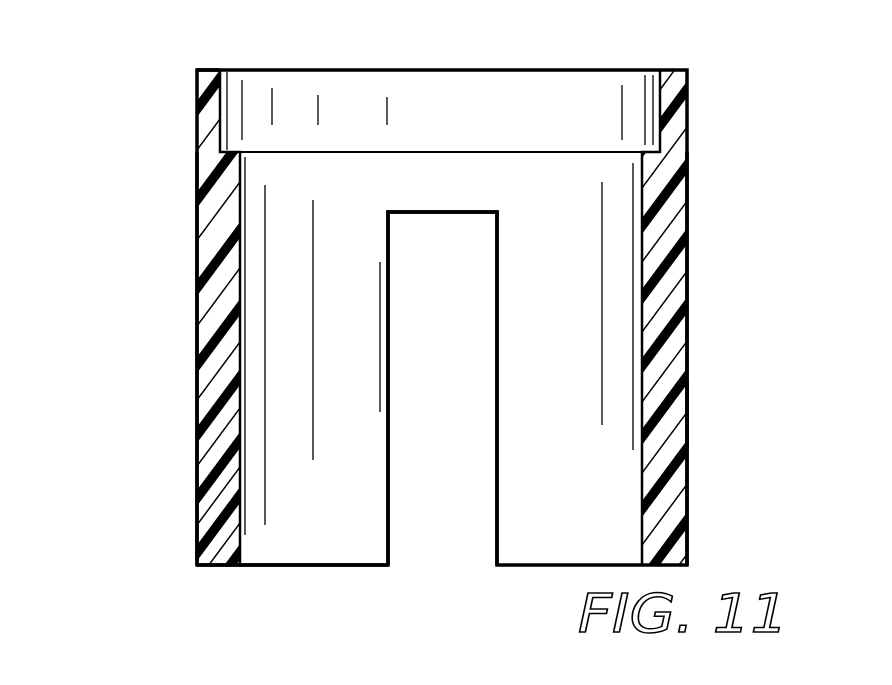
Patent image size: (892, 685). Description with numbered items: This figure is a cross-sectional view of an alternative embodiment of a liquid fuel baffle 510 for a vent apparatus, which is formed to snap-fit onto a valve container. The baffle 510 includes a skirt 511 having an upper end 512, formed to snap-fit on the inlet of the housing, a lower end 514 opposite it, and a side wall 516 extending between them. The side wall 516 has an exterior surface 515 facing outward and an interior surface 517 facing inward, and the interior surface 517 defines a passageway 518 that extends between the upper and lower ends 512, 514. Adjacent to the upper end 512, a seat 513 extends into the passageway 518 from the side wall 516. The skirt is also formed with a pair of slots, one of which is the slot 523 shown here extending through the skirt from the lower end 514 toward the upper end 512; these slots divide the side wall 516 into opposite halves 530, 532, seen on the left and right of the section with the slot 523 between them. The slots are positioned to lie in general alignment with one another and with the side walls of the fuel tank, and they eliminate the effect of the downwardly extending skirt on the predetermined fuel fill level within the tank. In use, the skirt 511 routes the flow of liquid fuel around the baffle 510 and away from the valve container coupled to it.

The baffle 510 is at (180, 326).
The skirt 511 is at (197, 395).
The upper end 512 is at (210, 69).
The seat 513 is at (330, 150).
The lower end 514 is at (217, 567).
The exterior surface 515 is at (689, 461).
The side wall 516 is at (678, 268).
The interior surface 517 is at (628, 520).
The passageway 518 is at (324, 536).
The slot 523 is at (391, 487).
The half of side wall 530 is at (191, 449).
The half of side wall 532 is at (692, 419).